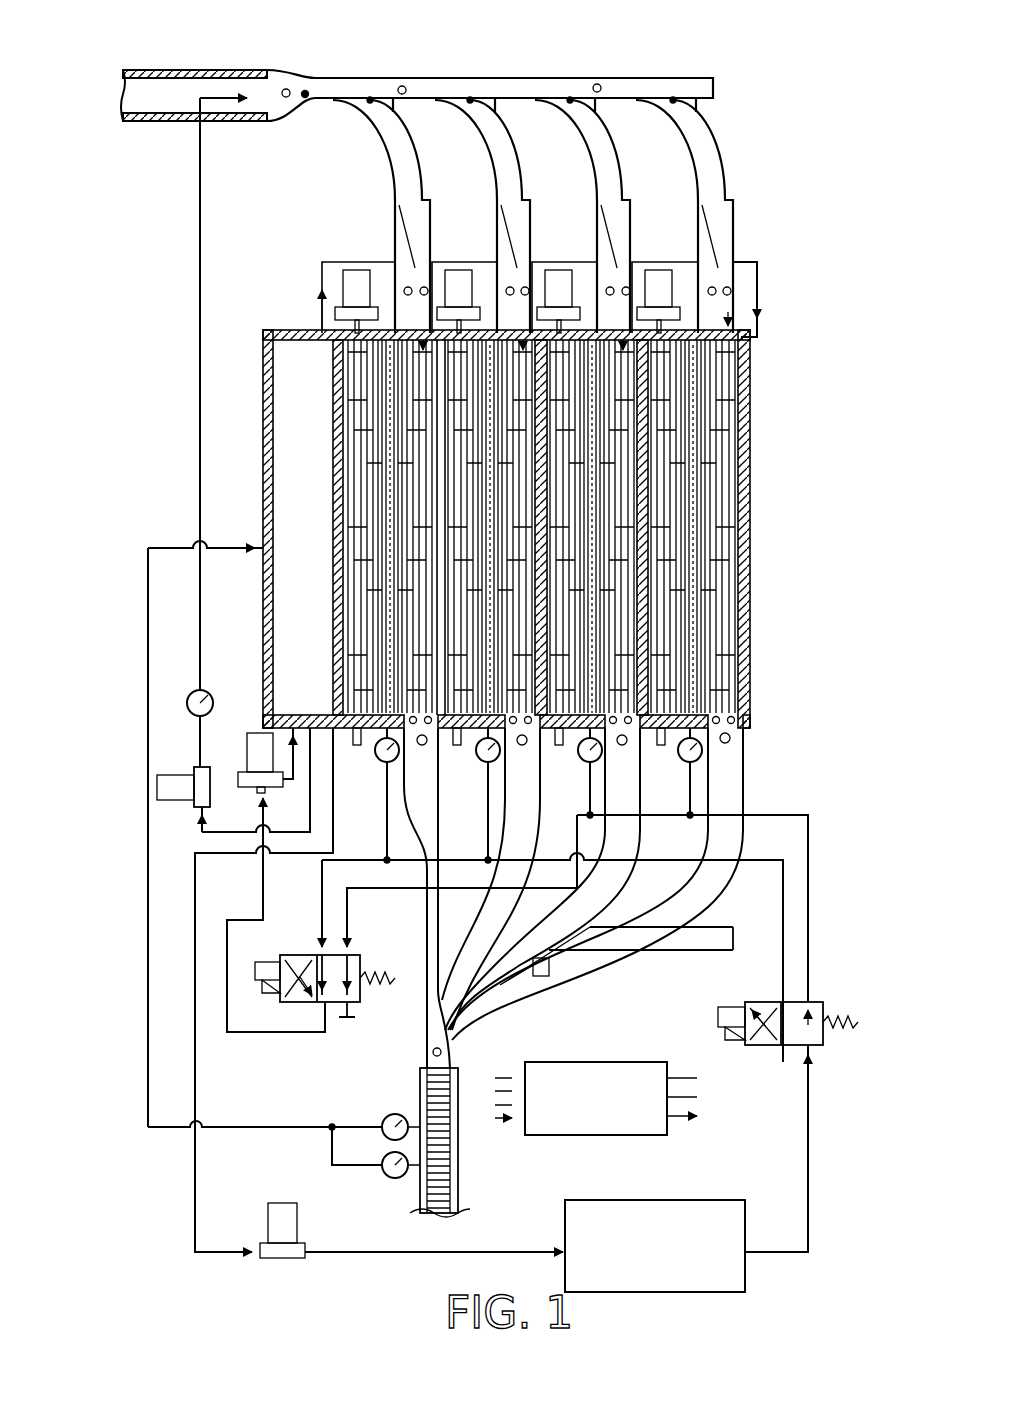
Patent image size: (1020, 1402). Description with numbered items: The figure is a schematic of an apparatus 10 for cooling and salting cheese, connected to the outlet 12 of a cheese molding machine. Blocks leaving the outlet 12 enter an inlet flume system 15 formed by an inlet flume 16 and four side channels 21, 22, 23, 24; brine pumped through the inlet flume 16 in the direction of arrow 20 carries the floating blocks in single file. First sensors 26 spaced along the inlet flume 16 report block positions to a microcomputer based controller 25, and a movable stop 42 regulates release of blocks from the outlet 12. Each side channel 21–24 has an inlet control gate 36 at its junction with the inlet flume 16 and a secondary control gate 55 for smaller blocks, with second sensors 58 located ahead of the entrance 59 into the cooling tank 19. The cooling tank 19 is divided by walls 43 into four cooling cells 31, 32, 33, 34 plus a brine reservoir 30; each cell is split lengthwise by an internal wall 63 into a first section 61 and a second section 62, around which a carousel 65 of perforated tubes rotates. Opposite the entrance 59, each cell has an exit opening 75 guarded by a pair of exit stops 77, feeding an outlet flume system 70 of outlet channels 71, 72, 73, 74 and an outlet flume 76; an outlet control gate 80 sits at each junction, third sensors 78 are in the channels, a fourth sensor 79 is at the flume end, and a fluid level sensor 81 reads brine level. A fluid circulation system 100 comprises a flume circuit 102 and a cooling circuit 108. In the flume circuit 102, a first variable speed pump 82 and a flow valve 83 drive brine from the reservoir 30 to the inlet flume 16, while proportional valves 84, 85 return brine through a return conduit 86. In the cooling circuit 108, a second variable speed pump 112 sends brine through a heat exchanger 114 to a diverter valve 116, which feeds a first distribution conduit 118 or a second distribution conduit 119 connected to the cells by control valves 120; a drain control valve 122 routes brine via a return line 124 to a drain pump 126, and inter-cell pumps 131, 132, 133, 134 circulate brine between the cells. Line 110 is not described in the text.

The apparatus for cooling and salting cheese 10 is at (170, 1155).
The outlet of cheese molding machine 12 is at (152, 121).
The inlet flume system 15 is at (298, 195).
The inlet flume 16 is at (470, 78).
The cooling tank 19 is at (752, 458).
The arrow indicating brine flow direction 20 is at (210, 120).
The first side channel 21 is at (380, 130).
The second side channel 22 is at (478, 130).
The third side channel 23 is at (595, 178).
The fourth side channel 24 is at (668, 118).
The controller 25 is at (612, 1136).
The first sensors 26 is at (286, 88).
The brine reservoir 30 is at (316, 464).
The first cooling cell 31 is at (405, 447).
The second cooling cell 32 is at (505, 447).
The third cooling cell 33 is at (603, 447).
The fourth cooling cell 34 is at (705, 447).
The inlet control gate 36 is at (340, 105).
The movable stop 42 is at (305, 98).
The walls 43 is at (345, 700).
The secondary control gate 55 is at (408, 287).
The second sensors 58 is at (424, 287).
The entrance 59 is at (748, 333).
The first section 61 is at (400, 525).
The second section 62 is at (355, 605).
The internal wall 63 is at (390, 480).
The carousel 65 is at (470, 383).
The outlet flume system 70 is at (570, 1018).
The first outlet channel 71 is at (437, 811).
The second outlet channel 72 is at (533, 821).
The third outlet channel 73 is at (633, 805).
The fourth outlet channel 74 is at (738, 803).
The exit opening 75 is at (720, 705).
The outlet flume 76 is at (462, 1010).
The exit stops 77 is at (735, 722).
The third sensors 78 is at (424, 746).
The fourth sensor 79 is at (433, 1052).
The outlet control gate 80 is at (560, 962).
The fluid level sensor 81 is at (549, 976).
The first variable speed pump 82 is at (194, 800).
The flow valve 83 is at (187, 703).
The proportional valve 84 is at (388, 1115).
The proportional valve 85 is at (390, 1178).
The return conduit 86 is at (295, 1125).
The fluid circulation system 100 is at (255, 882).
The flume circuit 102 is at (185, 758).
The cooling circuit 108 is at (800, 1118).
The line 110 is at (334, 838).
The second variable speed pump 112 is at (290, 1258).
The heat exchanger 114 is at (662, 1200).
The diverter valve 116 is at (765, 1005).
The first distribution conduit 118 is at (800, 815).
The second distribution conduit 119 is at (783, 950).
The control valves 120 is at (385, 763).
The drain control valve 122 is at (310, 958).
The return line 124 is at (285, 1032).
The drain pump 126 is at (258, 733).
The first inter-cell pump 131 is at (343, 285).
The second inter-cell pump 132 is at (475, 262).
The third inter-cell pump 133 is at (575, 262).
The fourth inter-cell pump 134 is at (677, 262).